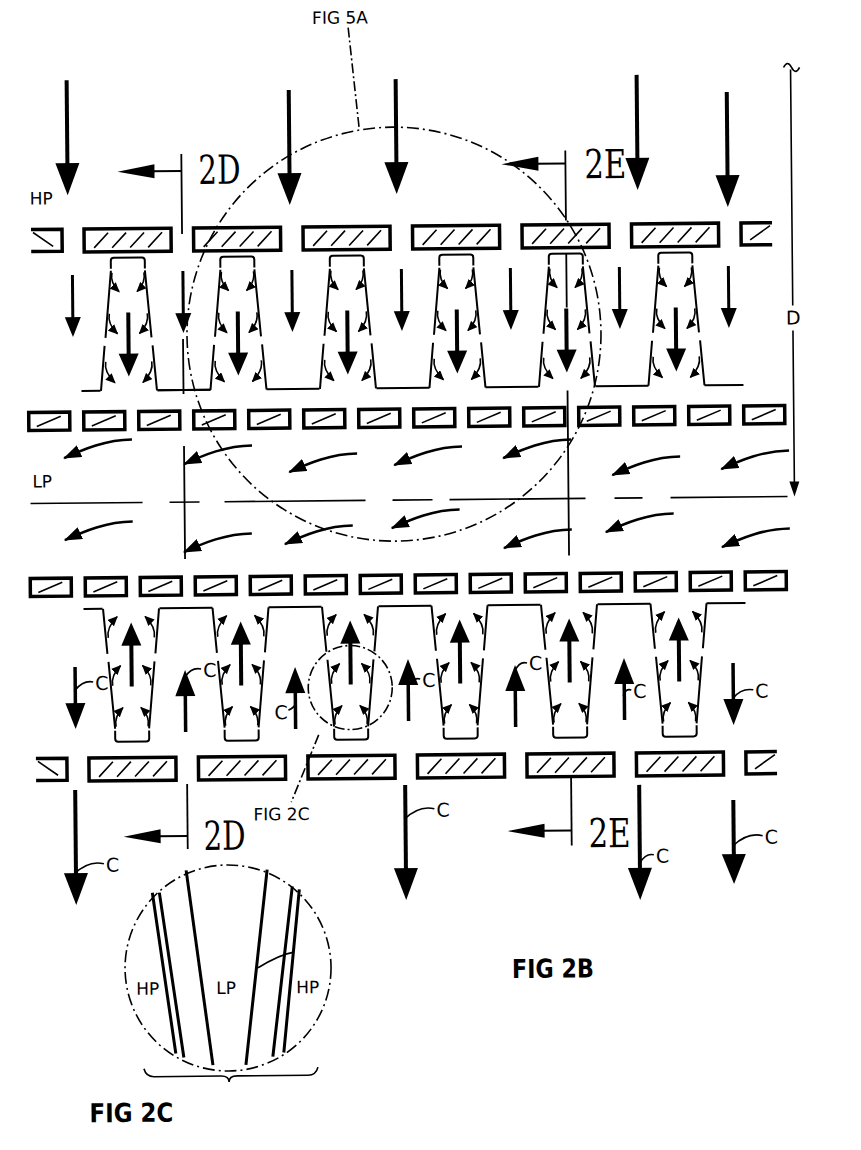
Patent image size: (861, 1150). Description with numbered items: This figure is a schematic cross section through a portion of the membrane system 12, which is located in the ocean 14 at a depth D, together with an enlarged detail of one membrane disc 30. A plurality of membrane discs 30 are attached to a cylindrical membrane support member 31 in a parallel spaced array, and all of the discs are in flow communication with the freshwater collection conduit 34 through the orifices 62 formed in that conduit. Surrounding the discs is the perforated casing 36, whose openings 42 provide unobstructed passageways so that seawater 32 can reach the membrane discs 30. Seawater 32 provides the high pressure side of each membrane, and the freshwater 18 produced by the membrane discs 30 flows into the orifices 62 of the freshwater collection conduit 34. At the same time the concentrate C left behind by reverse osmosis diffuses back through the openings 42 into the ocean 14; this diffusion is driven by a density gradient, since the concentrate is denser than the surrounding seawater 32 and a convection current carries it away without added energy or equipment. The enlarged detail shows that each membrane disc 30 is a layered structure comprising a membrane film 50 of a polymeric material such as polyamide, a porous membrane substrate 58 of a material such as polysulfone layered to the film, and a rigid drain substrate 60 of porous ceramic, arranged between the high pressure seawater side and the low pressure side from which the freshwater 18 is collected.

In FIG. 2B, the membrane system 12 is at (501, 121).
In FIG. 2B, the ocean 14 is at (469, 84).
In FIG. 2B, the freshwater 18 is at (329, 382).
In FIG. 2B, the membrane disc 30 is at (102, 362).
In FIG. 2C, the membrane disc 30 is at (231, 1086).
In FIG. 2B, the membrane support member 31 is at (158, 386).
In FIG. 2B, the seawater 32 is at (72, 130).
In FIG. 2B, the freshwater collection conduit 34 is at (766, 604).
In FIG. 2B, the perforated casing 36 is at (751, 253).
In FIG. 2B, the openings 42 is at (182, 230).
In FIG. 2C, the membrane film 50 is at (303, 906).
In FIG. 2C, the porous membrane substrate 58 is at (293, 931).
In FIG. 2C, the drain substrate 60 is at (275, 962).
In FIG. 2B, the orifices 62 is at (676, 433).